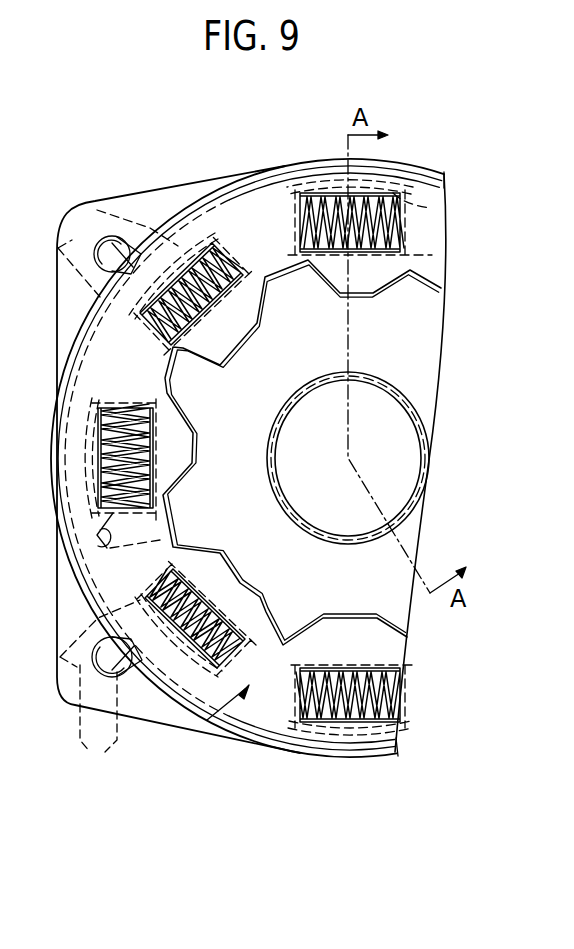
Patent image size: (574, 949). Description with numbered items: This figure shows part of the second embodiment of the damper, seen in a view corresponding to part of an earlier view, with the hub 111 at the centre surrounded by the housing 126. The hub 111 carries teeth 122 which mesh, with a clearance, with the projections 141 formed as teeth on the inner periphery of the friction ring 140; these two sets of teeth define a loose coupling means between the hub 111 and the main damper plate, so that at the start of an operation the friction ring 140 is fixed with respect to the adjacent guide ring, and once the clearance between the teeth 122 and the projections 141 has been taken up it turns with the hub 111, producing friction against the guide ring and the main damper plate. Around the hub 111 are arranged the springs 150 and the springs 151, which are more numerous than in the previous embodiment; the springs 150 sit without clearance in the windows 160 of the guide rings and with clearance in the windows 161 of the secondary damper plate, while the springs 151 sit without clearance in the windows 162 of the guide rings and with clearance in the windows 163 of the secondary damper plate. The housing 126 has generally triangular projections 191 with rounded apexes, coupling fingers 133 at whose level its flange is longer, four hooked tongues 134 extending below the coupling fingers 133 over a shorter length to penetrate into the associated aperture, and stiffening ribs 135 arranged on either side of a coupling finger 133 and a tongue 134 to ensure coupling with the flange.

The hub 111 is at (259, 520).
The teeth of the hub 122 is at (281, 628).
The housing 126 is at (160, 184).
The coupling fingers 133 is at (95, 249).
The tongues 134 is at (133, 672).
The stiffening ribs 135 is at (97, 723).
The friction ring 140 is at (207, 720).
The projections 141 is at (235, 313).
The springs 150 is at (393, 193).
The springs 151 is at (107, 550).
The windows of the guide rings 160 is at (302, 193).
The windows of the secondary damper plate 161 is at (359, 156).
The windows of the guide rings 162 is at (113, 410).
The windows of the secondary damper plate 163 is at (62, 617).
The projections 191 is at (103, 190).